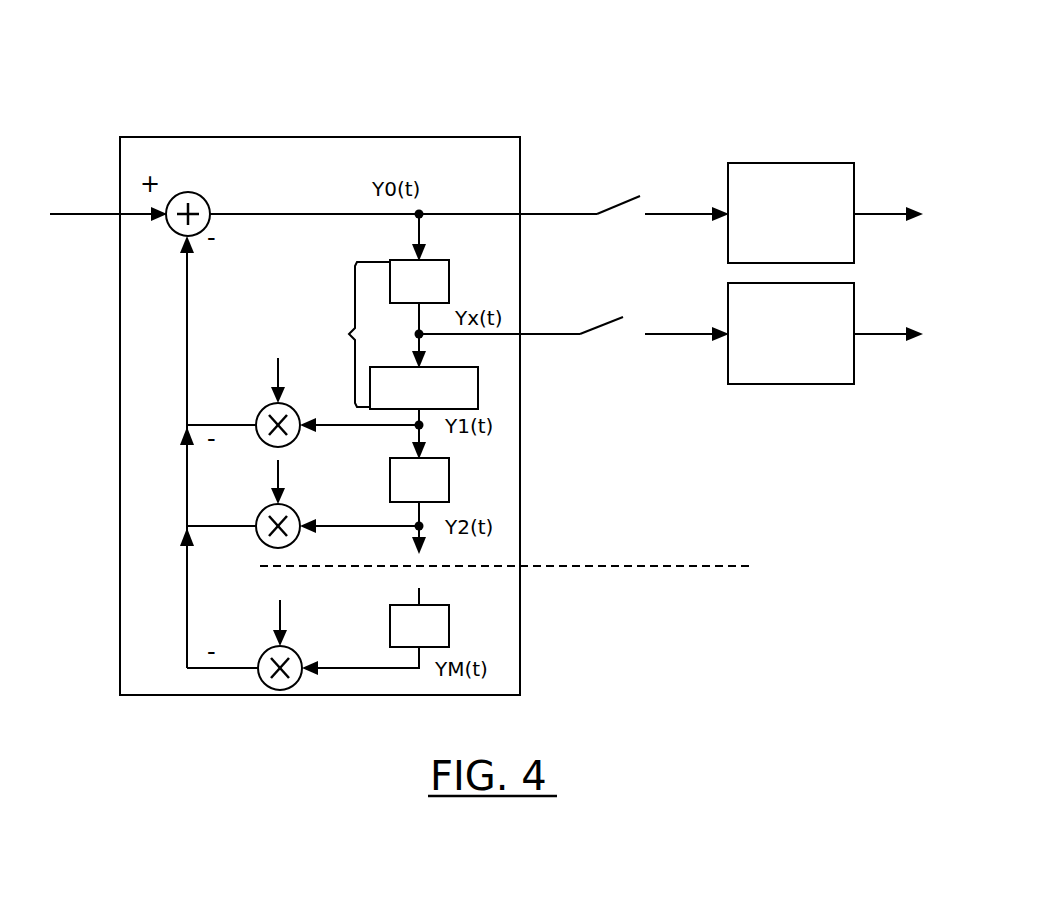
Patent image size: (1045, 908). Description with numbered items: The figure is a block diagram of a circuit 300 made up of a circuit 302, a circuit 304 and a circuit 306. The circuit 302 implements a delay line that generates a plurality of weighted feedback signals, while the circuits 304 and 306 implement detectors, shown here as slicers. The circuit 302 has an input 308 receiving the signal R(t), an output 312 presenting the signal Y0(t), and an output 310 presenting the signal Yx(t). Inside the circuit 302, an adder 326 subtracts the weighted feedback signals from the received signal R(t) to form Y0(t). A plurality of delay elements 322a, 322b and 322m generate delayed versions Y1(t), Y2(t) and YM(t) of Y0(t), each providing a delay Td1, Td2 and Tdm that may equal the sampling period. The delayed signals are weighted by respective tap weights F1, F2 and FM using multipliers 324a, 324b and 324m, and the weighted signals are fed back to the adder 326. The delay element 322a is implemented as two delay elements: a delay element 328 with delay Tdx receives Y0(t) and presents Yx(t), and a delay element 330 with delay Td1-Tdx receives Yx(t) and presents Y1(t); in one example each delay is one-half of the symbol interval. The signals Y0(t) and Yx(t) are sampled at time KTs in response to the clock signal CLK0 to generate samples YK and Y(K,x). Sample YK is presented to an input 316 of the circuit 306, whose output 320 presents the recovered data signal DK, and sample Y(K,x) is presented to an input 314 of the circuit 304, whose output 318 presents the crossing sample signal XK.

The circuit 300 is at (446, 46).
The circuit 302 is at (184, 137).
The circuit 304 is at (797, 384).
The circuit 306 is at (797, 162).
The input 308 is at (118, 214).
The output 310 is at (521, 336).
The output 312 is at (521, 216).
The input 314 is at (722, 338).
The input 316 is at (722, 220).
The output 318 is at (856, 336).
The output 320 is at (856, 216).
The delay element 322a is at (341, 334).
The delay element 322b is at (406, 458).
The delay element 322m is at (406, 605).
The multiplier 324a is at (266, 408).
The multiplier 324b is at (265, 510).
The multiplier 324m is at (268, 652).
The adder 326 is at (191, 192).
The delay element 328 is at (434, 259).
The delay element 330 is at (434, 366).